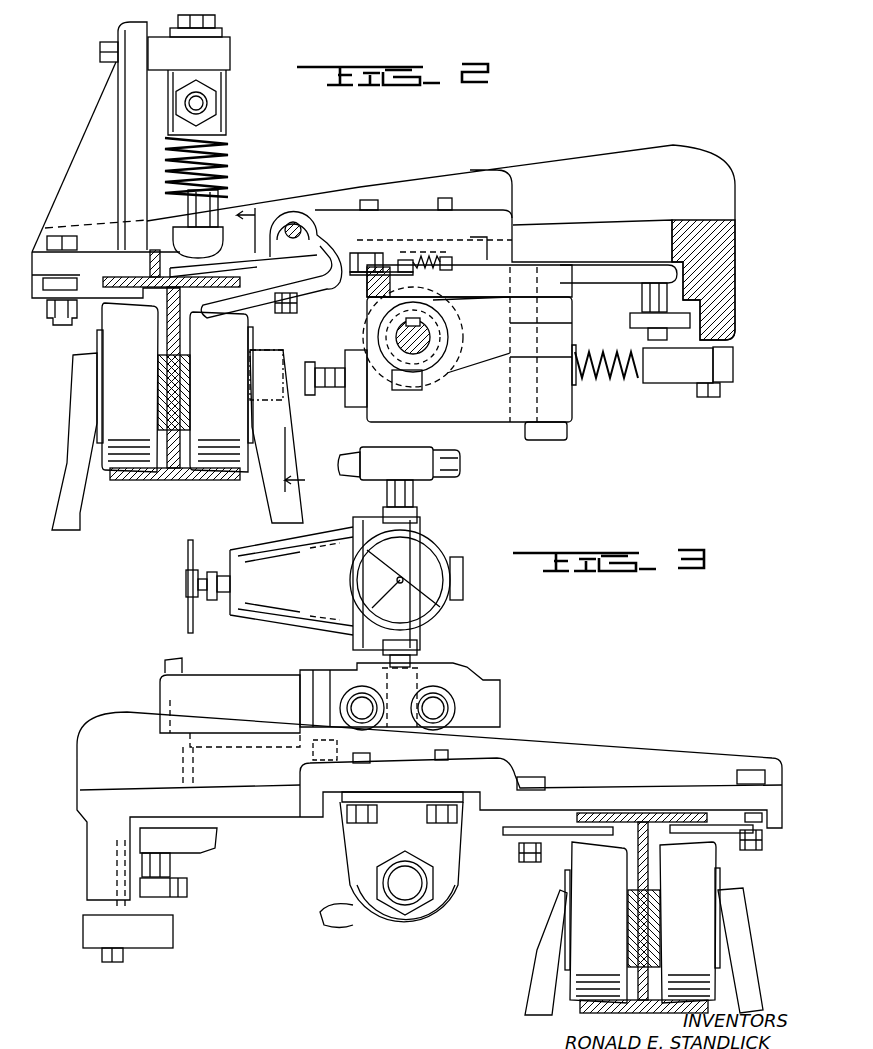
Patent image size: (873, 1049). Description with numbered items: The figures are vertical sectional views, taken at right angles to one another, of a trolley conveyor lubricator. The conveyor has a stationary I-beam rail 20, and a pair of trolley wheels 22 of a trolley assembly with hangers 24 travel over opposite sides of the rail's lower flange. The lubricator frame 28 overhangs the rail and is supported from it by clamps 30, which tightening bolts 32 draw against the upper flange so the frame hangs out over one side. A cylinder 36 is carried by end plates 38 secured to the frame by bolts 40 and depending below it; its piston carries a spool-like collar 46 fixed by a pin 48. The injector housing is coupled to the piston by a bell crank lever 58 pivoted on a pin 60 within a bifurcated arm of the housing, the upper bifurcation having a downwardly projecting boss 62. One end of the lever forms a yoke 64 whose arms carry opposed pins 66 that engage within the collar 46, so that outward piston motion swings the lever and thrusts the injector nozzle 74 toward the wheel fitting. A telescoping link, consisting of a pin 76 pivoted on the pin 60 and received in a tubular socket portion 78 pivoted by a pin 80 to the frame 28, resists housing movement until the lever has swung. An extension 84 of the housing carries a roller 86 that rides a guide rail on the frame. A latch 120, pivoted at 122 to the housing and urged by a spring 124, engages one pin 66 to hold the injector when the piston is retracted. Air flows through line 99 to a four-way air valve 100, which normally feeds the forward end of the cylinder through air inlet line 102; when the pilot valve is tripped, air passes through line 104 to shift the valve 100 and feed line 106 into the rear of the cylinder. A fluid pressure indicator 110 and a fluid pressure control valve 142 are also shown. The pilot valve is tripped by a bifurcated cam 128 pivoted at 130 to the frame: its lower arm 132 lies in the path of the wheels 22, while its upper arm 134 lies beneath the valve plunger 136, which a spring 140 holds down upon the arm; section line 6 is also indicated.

In FIG. 2, the section line arrow 6 is at (312, 480).
In FIG. 2, the I-beam rail 20 is at (167, 482).
In FIG. 3, the I-beam rail 20 is at (607, 1013).
In FIG. 2, the trolley wheels 22 is at (120, 382).
In FIG. 3, the trolley wheels 22 is at (700, 880).
In FIG. 2, the hangers 24 is at (72, 477).
In FIG. 3, the hangers 24 is at (545, 987).
In FIG. 2, the frame 28 is at (722, 312).
In FIG. 3, the frame 28 is at (87, 800).
In FIG. 2, the clamps 30 is at (100, 293).
In FIG. 3, the clamps 30 is at (563, 836).
In FIG. 3, the tightening bolts 32 is at (521, 849).
In FIG. 3, the cylinder 36 is at (395, 937).
In FIG. 3, the end plates 38 is at (360, 847).
In FIG. 3, the bolts 40 is at (353, 823).
In FIG. 2, the spool-like collar 46 is at (392, 324).
In FIG. 2, the pin 48 is at (383, 337).
In FIG. 2, the bell crank lever 58 is at (568, 337).
In FIG. 2, the pin 60 is at (543, 427).
In FIG. 2, the boss 62 is at (568, 307).
In FIG. 2, the yoke 64 is at (440, 378).
In FIG. 2, the pins 66 is at (455, 274).
In FIG. 2, the injector nozzle 74 is at (333, 382).
In FIG. 2, the pin 76 is at (578, 385).
In FIG. 2, the tubular socket portion 78 is at (663, 373).
In FIG. 3, the tubular socket portion 78 is at (163, 937).
In FIG. 2, the pin 80 is at (703, 397).
In FIG. 3, the pin 80 is at (110, 962).
In FIG. 3, the extension 84 is at (187, 843).
In FIG. 3, the roller 86 is at (187, 896).
In FIG. 3, the line 99 is at (348, 458).
In FIG. 3, the four-way air valve 100 is at (470, 674).
In FIG. 3, the air inlet line 102 is at (353, 697).
In FIG. 3, the line 104 is at (172, 670).
In FIG. 3, the line 106 is at (447, 708).
In FIG. 3, the fluid pressure indicator 110 is at (427, 555).
In FIG. 2, the latch 120 is at (400, 260).
In FIG. 2, the pivot 122 is at (368, 262).
In FIG. 2, the spring 124 is at (422, 256).
In FIG. 2, the bifurcated cam 128 is at (293, 222).
In FIG. 2, the pivot 130 is at (300, 222).
In FIG. 2, the lower arm 132 is at (278, 316).
In FIG. 2, the upper arm 134 is at (258, 210).
In FIG. 2, the plunger 136 is at (186, 207).
In FIG. 2, the spring 140 is at (228, 152).
In FIG. 3, the fluid pressure control valve 142 is at (188, 620).